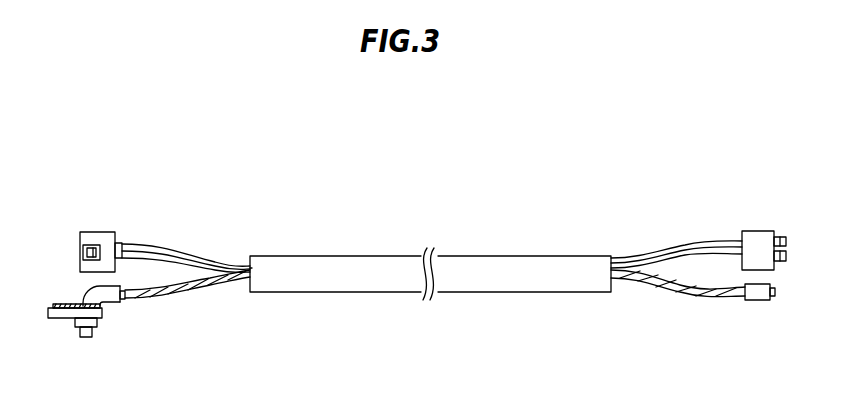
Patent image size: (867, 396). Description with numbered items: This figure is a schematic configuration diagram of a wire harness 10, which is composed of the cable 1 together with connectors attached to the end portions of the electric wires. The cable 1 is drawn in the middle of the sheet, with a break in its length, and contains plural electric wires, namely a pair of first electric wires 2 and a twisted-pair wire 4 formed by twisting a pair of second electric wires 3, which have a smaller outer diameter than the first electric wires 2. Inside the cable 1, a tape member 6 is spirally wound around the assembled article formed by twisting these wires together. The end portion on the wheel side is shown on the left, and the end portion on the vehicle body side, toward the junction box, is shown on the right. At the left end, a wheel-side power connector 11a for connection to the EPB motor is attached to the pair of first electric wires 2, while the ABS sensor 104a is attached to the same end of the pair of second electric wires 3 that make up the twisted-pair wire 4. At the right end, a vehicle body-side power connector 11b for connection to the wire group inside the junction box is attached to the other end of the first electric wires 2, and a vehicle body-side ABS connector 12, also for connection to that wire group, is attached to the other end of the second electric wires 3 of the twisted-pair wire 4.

The cable 1 is at (453, 253).
The first electric wires 2 is at (162, 292).
The second electric wires 3 is at (157, 252).
The twisted-pair wire 4 is at (198, 285).
The tape member 6 is at (543, 286).
The wire harness 10 is at (566, 205).
The wheel-side power connector 11a is at (79, 255).
The vehicle body-side power connector 11b is at (787, 253).
The vehicle body-side ABS connector 12 is at (776, 292).
The ABS sensor 104a is at (82, 292).